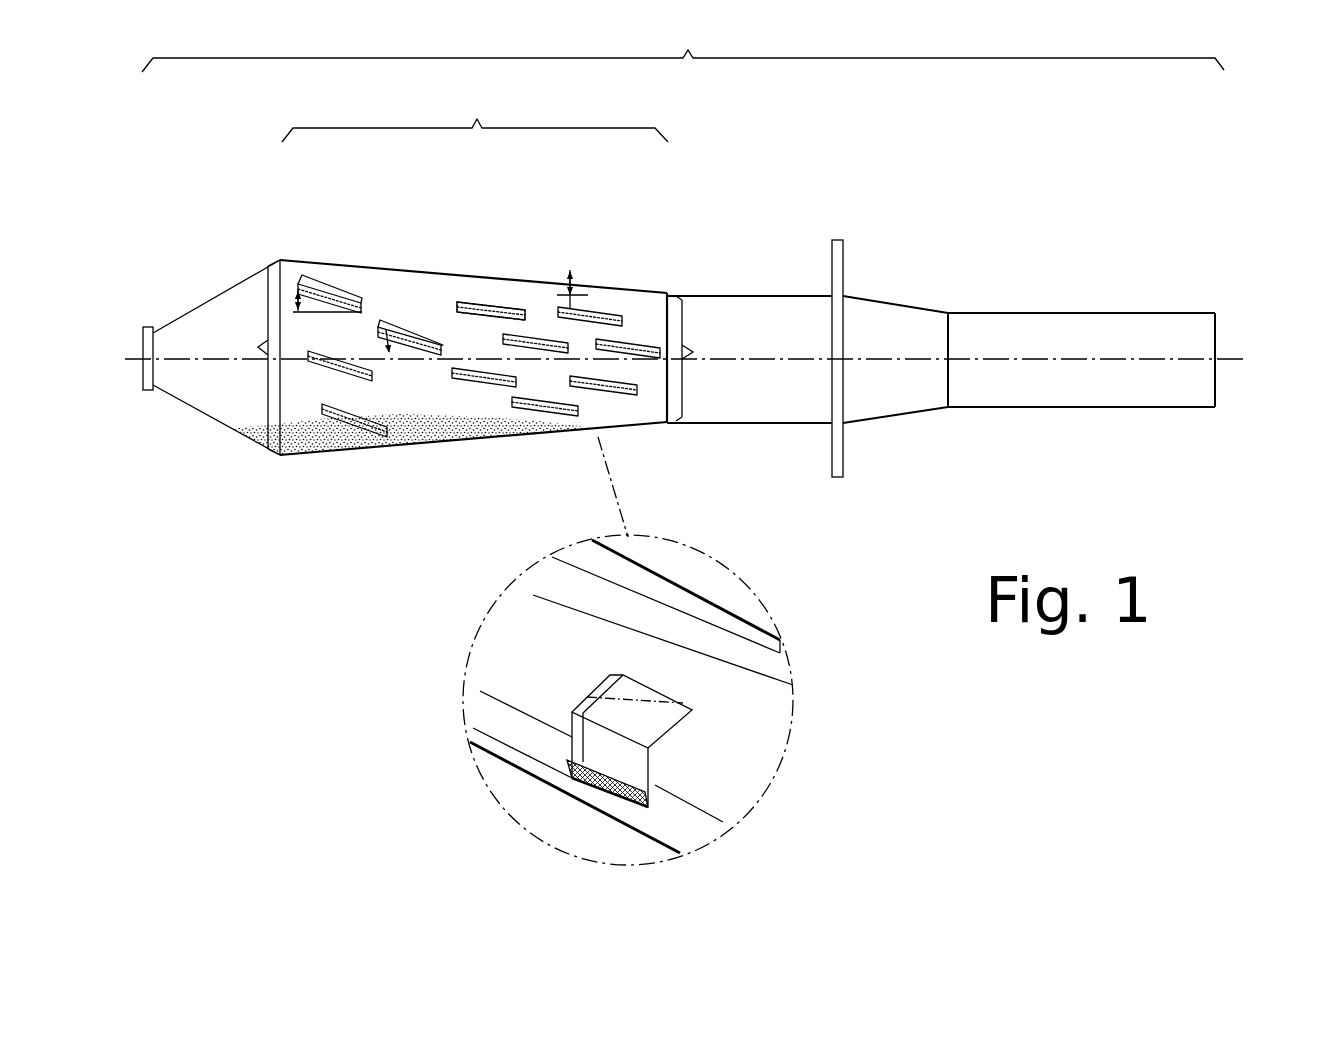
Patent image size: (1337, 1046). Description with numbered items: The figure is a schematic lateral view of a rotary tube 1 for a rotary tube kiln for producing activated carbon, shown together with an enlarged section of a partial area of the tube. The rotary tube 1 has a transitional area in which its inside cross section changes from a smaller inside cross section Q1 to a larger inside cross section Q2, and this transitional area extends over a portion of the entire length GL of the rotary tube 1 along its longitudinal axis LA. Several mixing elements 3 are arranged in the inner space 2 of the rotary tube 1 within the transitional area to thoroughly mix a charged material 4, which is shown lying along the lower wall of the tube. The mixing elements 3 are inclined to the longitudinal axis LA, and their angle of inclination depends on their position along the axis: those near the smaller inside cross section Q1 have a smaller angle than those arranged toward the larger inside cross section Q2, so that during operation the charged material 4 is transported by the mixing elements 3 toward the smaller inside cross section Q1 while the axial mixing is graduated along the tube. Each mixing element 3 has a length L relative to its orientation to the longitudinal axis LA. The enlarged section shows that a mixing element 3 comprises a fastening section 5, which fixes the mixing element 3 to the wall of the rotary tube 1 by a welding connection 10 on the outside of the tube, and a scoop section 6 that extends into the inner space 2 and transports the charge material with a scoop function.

The rotary tube 1 is at (258, 237).
The inner space 2 is at (398, 290).
The mixing elements 3 is at (483, 373).
The charged material 4 is at (257, 443).
The fastening sections 5 is at (597, 778).
The scoop sections 6 is at (652, 720).
The welding connection 10 is at (617, 390).
The smaller inside cross section Q1 is at (696, 352).
The larger inside cross section Q2 is at (258, 347).
The longitudinal axis LA is at (713, 365).
The entire length GL is at (683, 43).
The length L is at (353, 272).